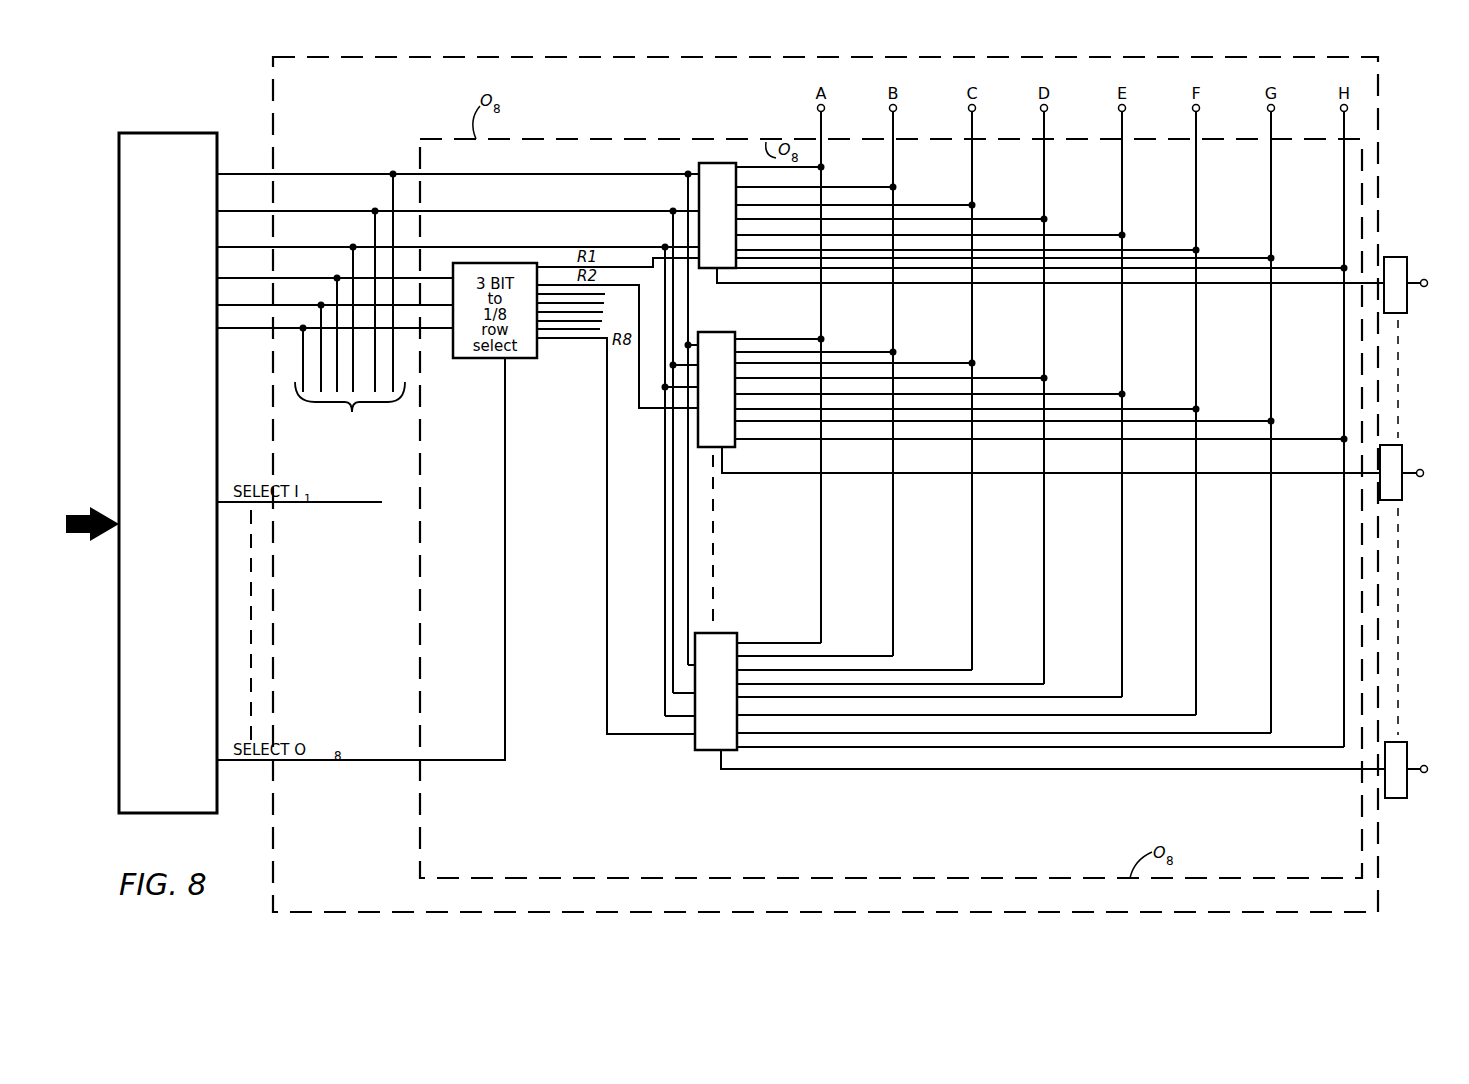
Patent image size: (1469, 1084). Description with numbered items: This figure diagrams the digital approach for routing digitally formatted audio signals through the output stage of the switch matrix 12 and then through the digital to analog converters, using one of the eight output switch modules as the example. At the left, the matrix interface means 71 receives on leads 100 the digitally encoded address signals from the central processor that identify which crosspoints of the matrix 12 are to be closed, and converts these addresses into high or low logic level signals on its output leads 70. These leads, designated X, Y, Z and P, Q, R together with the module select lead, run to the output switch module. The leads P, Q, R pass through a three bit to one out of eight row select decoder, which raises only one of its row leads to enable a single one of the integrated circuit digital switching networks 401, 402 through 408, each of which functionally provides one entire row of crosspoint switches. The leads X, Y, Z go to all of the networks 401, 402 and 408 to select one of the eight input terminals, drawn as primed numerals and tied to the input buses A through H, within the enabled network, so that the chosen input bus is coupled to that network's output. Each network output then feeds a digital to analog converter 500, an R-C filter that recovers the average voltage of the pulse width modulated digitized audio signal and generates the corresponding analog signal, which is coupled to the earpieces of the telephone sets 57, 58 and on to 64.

The switch matrix 12 is at (403, 57).
The leads 70 is at (231, 142).
The matrix interface means 71 is at (140, 133).
The leads 100 is at (77, 510).
The digital switching network 401 is at (723, 163).
The digital switching network 402 is at (702, 338).
The digital switching network 408 is at (720, 634).
The digital to analog converter 500 is at (1393, 257).
The telephone set 57 is at (1433, 283).
The telephone set 58 is at (1428, 473).
The telephone set 64 is at (1433, 769).